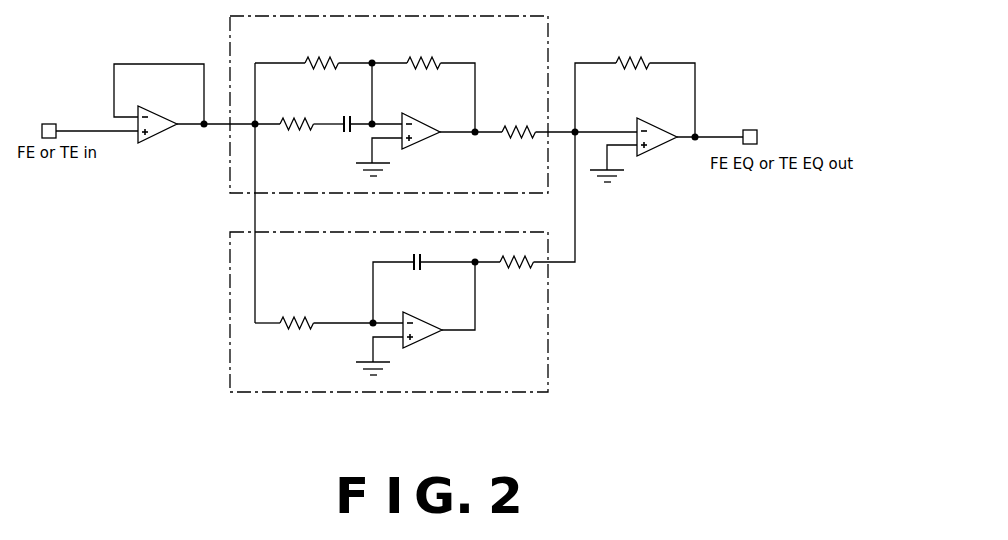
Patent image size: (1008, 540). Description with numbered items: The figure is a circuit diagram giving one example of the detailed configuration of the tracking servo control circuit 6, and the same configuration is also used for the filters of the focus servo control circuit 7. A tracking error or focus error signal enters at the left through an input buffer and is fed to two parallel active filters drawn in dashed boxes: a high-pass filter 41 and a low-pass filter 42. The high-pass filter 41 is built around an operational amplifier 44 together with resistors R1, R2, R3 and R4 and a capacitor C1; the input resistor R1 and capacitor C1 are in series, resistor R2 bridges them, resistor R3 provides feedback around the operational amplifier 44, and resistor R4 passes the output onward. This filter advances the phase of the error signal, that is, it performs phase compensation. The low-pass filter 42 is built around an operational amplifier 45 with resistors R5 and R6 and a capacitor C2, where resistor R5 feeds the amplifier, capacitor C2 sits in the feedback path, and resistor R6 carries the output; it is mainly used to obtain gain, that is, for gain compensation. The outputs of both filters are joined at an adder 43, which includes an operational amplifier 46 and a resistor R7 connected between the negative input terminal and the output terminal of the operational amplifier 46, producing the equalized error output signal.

The tracking servo control circuit 6 is at (142, 380).
The focus servo control circuit 7 is at (197, 355).
The high-pass filter 41 is at (228, 182).
The low-pass filter 42 is at (230, 298).
The adder 43 is at (659, 123).
The operational amplifier 44 is at (420, 142).
The operational amplifier 45 is at (422, 340).
The operational amplifier 46 is at (652, 118).
The resistor R1 is at (292, 130).
The resistor R2 is at (328, 58).
The resistor R3 is at (430, 58).
The resistor R4 is at (515, 127).
The resistor R5 is at (295, 315).
The resistor R6 is at (510, 270).
The resistor R7 is at (626, 57).
The capacitor C1 is at (347, 115).
The capacitor C2 is at (415, 270).